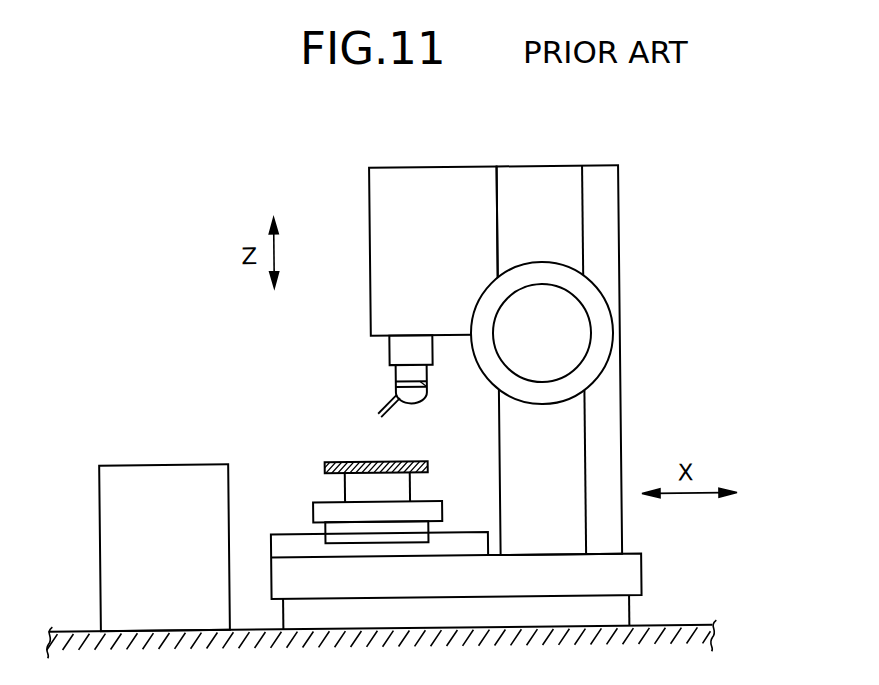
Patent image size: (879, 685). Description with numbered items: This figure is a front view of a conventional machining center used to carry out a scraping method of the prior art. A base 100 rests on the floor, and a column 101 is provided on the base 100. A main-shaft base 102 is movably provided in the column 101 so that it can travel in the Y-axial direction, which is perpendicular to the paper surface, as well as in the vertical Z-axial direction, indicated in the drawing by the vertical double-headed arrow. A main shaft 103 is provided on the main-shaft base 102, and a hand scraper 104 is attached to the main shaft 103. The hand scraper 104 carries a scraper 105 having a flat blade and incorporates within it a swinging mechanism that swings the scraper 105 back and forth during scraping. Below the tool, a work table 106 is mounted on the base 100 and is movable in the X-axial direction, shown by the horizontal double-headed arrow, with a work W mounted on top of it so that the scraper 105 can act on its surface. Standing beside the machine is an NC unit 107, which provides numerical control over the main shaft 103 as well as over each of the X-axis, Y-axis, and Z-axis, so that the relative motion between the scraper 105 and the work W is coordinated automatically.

The base 100 is at (629, 578).
The column 101 is at (571, 246).
The main-shaft base 102 is at (379, 216).
The main shaft 103 is at (389, 350).
The hand scraper 104 is at (425, 397).
The scraper 105 is at (393, 400).
The work table 106 is at (327, 508).
The NC unit 107 is at (108, 562).
The work W is at (346, 461).